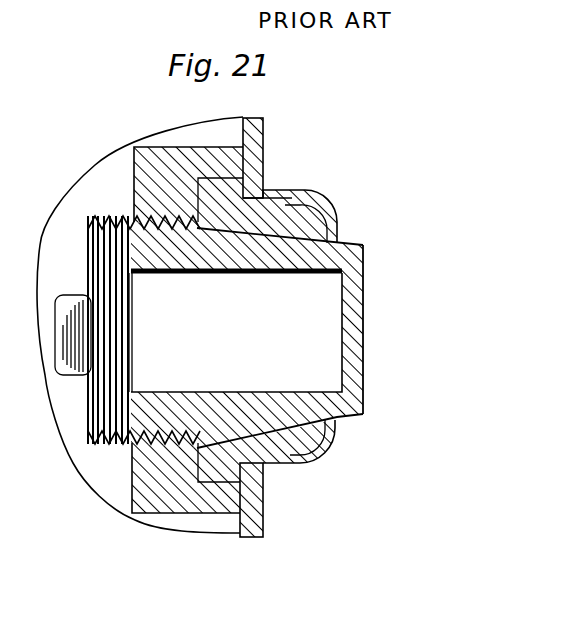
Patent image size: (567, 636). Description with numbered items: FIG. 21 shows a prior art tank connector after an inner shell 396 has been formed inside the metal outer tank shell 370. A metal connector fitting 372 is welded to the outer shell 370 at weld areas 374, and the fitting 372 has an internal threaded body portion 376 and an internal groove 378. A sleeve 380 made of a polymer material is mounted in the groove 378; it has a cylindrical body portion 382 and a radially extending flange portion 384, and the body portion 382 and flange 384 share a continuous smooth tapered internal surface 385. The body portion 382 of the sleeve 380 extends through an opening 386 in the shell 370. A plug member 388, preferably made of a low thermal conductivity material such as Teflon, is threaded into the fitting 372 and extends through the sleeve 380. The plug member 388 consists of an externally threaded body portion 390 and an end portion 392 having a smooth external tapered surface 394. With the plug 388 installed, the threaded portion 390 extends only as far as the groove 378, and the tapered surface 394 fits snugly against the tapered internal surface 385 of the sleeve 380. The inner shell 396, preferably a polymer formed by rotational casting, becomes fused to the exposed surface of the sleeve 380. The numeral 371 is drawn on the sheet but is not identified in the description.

The outer tank shell 370 is at (233, 116).
The flange portion 371 is at (223, 159).
The connector fitting 372 is at (153, 145).
The weld areas 374 is at (222, 518).
The internal threaded body portion 376 is at (153, 217).
The internal groove 378 is at (205, 187).
The sleeve 380 is at (314, 196).
The cylindrical body portion 382 is at (331, 434).
The radially extending flange portion 384 is at (210, 467).
The tapered internal surface 385 is at (284, 407).
The opening 386 is at (308, 192).
The plug member 388 is at (175, 243).
The externally threaded body portion 390 is at (110, 458).
The end portion 392 is at (370, 261).
The tapered surface 394 is at (347, 241).
The inner shell 396 is at (262, 138).